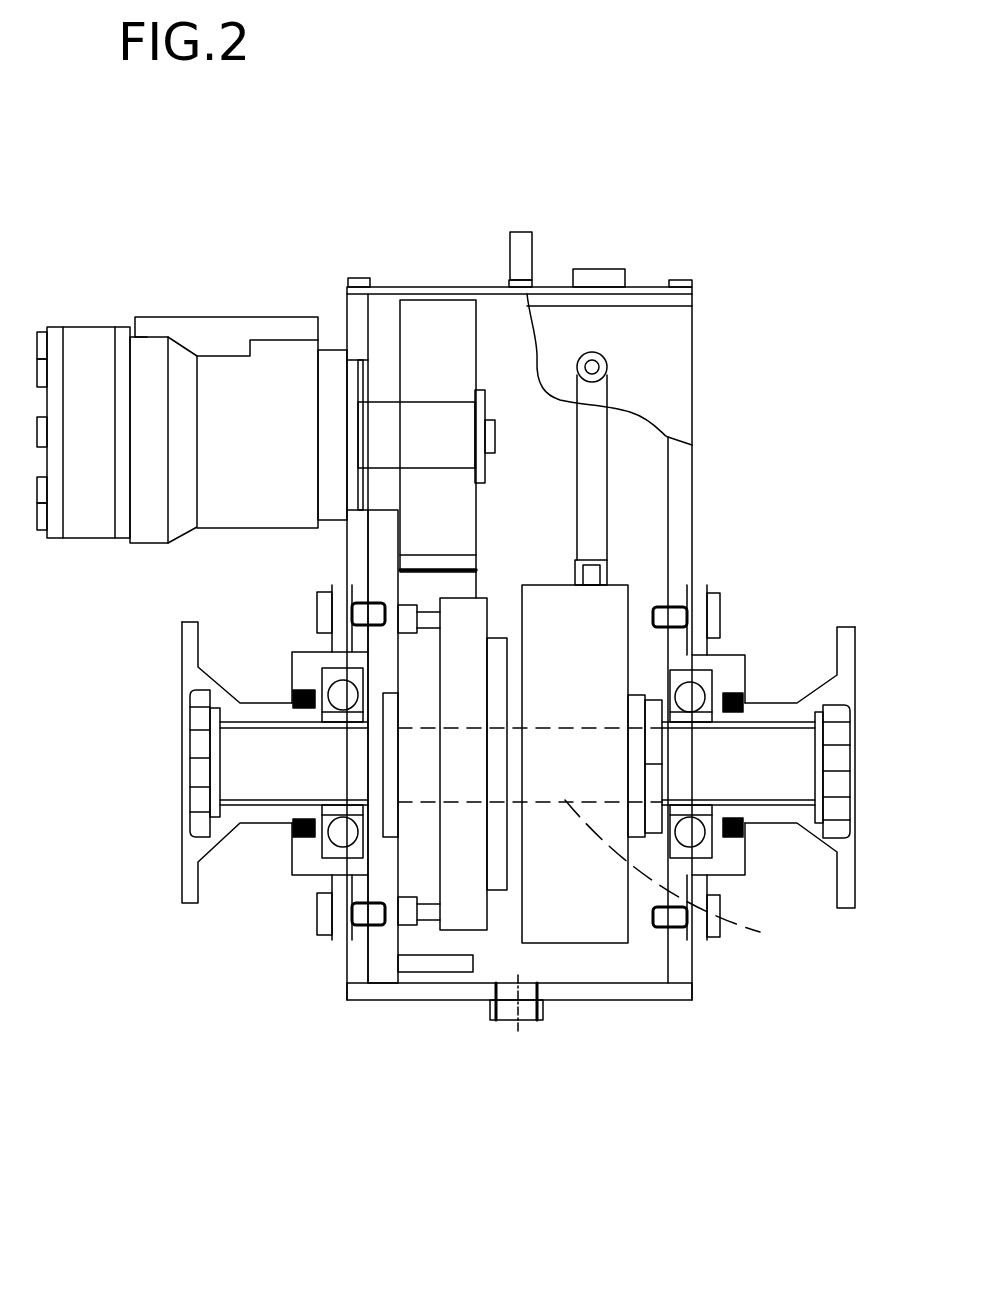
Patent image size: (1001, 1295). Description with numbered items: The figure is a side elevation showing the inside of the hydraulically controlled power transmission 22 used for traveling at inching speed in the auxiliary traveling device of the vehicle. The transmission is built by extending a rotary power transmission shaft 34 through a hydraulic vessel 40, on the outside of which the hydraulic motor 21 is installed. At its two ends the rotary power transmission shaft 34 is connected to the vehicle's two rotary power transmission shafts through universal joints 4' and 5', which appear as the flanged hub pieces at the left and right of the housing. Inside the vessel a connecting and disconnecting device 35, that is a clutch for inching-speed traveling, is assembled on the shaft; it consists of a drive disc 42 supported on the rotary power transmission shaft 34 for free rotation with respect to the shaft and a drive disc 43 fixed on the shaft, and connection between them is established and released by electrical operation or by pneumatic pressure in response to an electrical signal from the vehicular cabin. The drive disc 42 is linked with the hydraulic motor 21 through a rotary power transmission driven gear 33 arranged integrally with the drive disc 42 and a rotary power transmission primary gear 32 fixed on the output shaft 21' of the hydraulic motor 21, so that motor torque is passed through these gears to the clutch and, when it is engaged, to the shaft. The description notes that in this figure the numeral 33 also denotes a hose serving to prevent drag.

The hydraulic motor 21 is at (192, 375).
The output shaft of the hydraulic motor 21' is at (391, 345).
The hydraulically controlled power transmission 22 is at (678, 277).
The rotary power transmission primary gear 32 is at (428, 327).
The rotary power transmission driven gear 33 is at (593, 476).
The rotary power transmission shaft 34 is at (760, 932).
The connecting and disconnecting device 35 is at (603, 1100).
The hydraulic vessel 40 is at (660, 378).
The drive disc 42 is at (462, 878).
The drive disc 43 is at (592, 907).
The universal joint 4' is at (194, 786).
The universal joint 5' is at (812, 714).